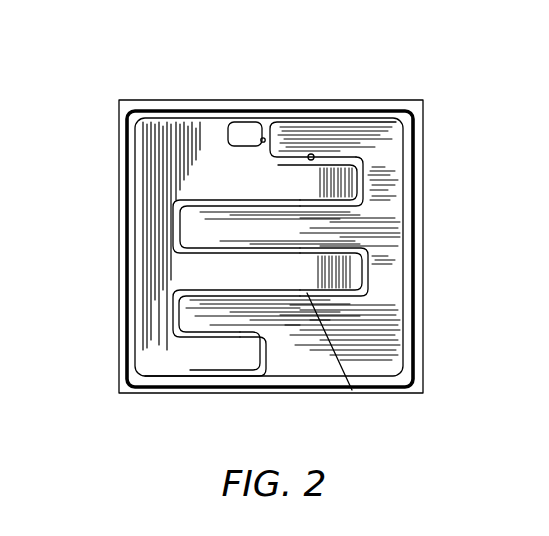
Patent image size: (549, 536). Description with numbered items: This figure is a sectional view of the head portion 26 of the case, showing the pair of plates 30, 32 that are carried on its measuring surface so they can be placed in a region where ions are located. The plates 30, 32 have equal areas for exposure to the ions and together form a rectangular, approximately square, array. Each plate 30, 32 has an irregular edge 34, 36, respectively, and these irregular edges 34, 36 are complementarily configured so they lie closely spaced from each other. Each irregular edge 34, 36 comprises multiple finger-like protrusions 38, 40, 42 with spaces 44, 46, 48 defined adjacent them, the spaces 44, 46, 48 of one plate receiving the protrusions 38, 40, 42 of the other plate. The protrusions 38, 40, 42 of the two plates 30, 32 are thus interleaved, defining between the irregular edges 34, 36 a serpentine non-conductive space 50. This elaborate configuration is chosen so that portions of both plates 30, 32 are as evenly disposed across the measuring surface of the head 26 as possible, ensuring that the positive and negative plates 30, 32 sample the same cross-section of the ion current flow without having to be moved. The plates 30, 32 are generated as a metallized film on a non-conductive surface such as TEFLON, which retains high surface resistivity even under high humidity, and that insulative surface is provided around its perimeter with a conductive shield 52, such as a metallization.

The head portion 26 is at (311, 101).
The plate 30 is at (148, 184).
The plate 32 is at (390, 160).
The irregular edge 34 is at (294, 121).
The irregular edge 36 is at (313, 154).
The finger-like protrusion 38 is at (305, 188).
The finger-like protrusion 40 is at (197, 227).
The finger-like protrusion 42 is at (340, 136).
The space 44 is at (232, 120).
The space 46 is at (366, 270).
The space 48 is at (365, 183).
The serpentine non-conductive space 50 is at (274, 204).
The conductive shield 52 is at (423, 118).